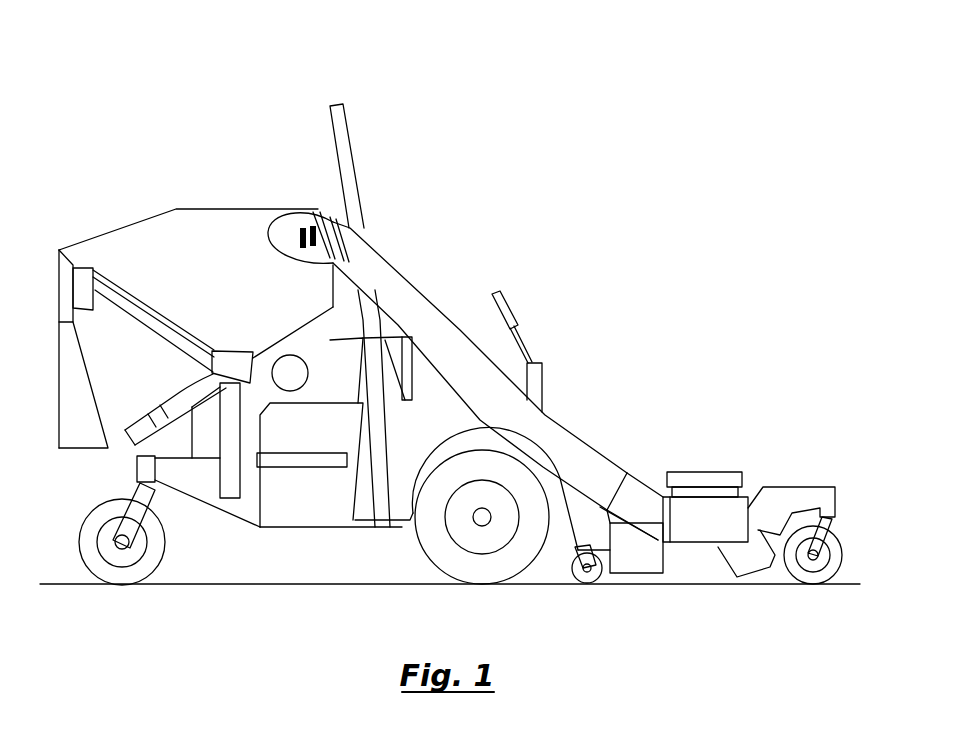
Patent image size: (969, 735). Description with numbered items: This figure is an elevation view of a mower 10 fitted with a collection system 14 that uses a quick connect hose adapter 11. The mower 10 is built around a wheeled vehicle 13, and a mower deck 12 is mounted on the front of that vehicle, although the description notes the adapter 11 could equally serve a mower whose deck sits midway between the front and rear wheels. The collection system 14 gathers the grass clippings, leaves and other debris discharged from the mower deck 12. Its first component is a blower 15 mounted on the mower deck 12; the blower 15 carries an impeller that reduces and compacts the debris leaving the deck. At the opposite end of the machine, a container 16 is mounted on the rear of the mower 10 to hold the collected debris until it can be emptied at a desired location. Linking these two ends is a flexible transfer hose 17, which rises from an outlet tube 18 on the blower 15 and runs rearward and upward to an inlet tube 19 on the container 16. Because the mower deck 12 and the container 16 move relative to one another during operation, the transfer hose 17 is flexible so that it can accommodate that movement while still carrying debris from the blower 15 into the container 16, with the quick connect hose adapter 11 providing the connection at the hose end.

The mower 10 is at (518, 253).
The quick connect hose adapter 11 is at (327, 227).
The mower deck 12 is at (737, 553).
The wheeled vehicle 13 is at (298, 513).
The collection system 14 is at (722, 458).
The blower 15 is at (697, 477).
The container 16 is at (160, 235).
The flexible transfer hose 17 is at (400, 278).
The outlet tube 18 is at (635, 482).
The inlet tube 19 is at (288, 225).